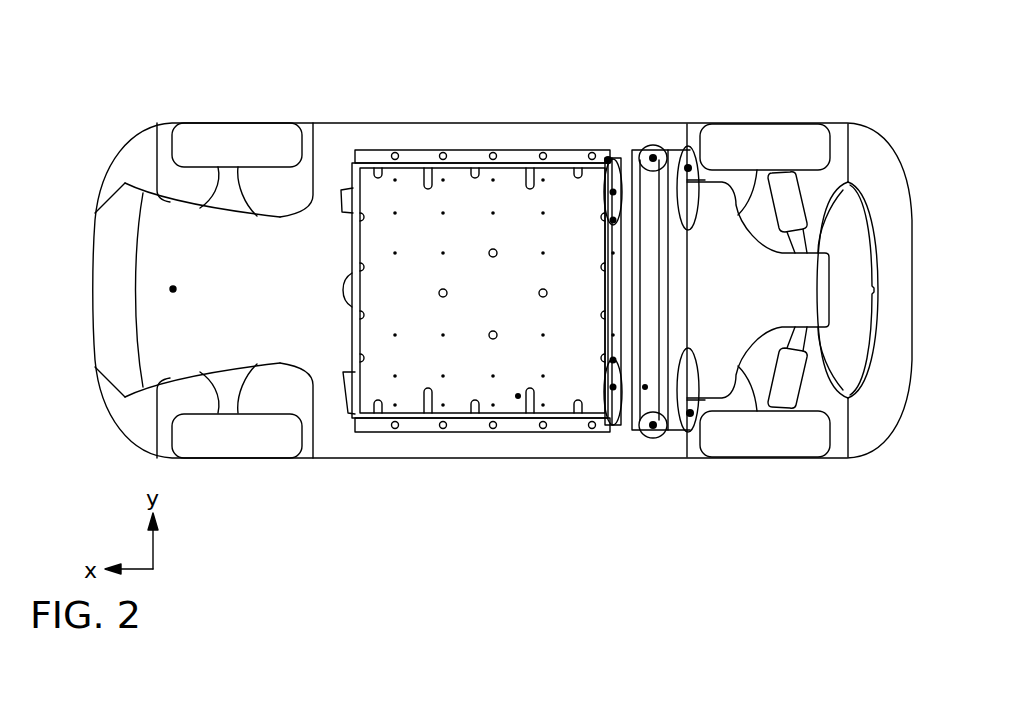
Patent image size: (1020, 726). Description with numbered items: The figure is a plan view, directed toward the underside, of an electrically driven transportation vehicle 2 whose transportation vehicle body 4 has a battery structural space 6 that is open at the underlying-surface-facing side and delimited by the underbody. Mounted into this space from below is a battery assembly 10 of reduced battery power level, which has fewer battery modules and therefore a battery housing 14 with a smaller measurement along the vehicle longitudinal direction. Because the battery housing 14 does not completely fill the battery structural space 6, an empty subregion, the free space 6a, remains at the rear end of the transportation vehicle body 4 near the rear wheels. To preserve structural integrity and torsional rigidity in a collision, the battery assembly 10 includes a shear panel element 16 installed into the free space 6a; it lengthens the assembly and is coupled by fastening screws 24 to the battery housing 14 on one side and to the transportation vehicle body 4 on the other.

The transportation vehicle 2 is at (223, 68).
The transportation vehicle body 4 is at (170, 289).
The battery structural space 6 is at (477, 137).
The free space 6a is at (629, 127).
The battery assembly 10 is at (700, 513).
The battery housing 14 is at (519, 399).
The shear panel element 16 is at (644, 391).
The fastening screws 24 is at (606, 155).